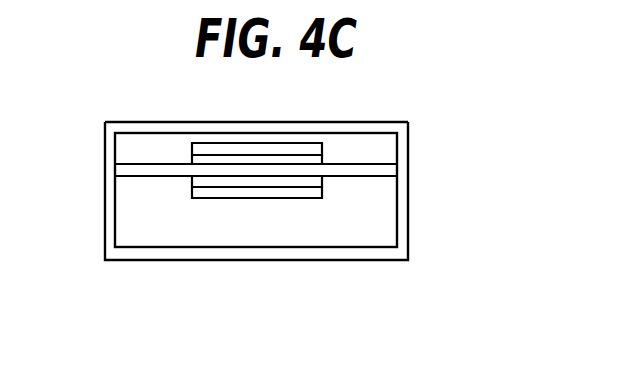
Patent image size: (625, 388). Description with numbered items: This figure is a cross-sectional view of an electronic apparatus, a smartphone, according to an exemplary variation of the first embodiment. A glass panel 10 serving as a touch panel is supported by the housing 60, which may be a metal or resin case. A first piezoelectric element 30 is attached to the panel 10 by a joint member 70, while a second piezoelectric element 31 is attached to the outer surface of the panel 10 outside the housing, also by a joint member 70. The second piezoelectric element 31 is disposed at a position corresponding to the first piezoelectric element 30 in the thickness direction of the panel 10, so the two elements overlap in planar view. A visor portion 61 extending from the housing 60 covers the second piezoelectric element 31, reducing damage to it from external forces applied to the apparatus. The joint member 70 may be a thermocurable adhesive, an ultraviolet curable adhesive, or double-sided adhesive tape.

The panel 10 is at (345, 173).
The first piezoelectric element 30 is at (215, 193).
The second piezoelectric element 31 is at (226, 148).
The housing 60 is at (405, 212).
The visor portion 61 is at (143, 128).
The joint member 70 is at (298, 158).